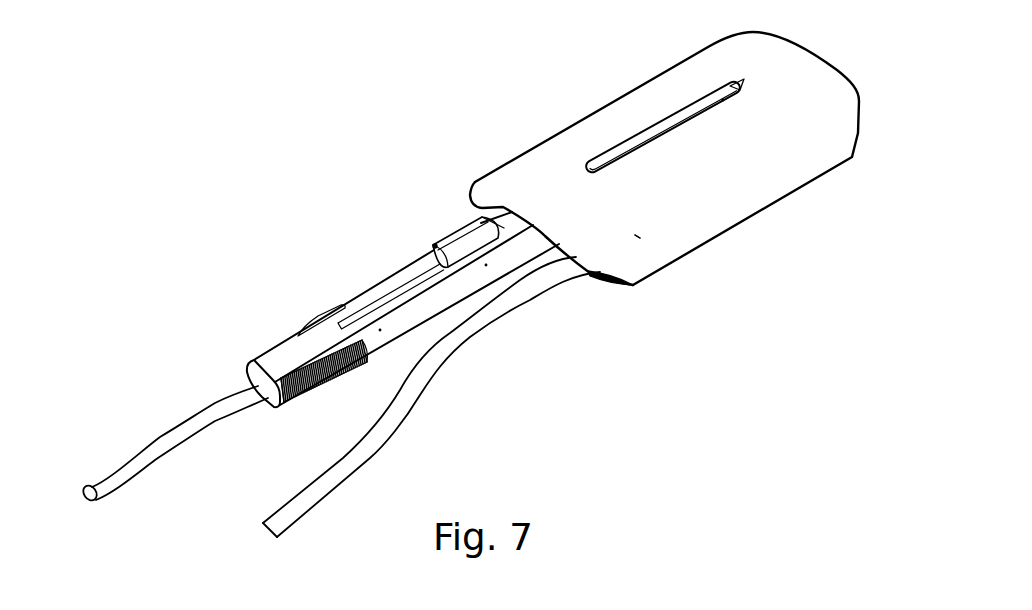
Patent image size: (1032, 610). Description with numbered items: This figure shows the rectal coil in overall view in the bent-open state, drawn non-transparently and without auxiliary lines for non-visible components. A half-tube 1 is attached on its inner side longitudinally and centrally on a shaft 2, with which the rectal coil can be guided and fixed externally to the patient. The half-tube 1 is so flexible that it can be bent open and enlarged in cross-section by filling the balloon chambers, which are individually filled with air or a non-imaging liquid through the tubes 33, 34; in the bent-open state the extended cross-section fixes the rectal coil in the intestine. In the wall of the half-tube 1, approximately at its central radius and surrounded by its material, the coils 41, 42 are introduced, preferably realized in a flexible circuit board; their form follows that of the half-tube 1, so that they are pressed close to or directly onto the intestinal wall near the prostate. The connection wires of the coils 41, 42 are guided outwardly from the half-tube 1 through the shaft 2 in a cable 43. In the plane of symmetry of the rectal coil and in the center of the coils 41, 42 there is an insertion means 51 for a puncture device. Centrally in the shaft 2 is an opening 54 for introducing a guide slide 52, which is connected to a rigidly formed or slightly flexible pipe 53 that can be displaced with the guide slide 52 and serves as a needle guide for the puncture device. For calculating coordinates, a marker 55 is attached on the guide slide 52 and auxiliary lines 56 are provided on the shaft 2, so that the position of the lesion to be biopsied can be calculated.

The half-tube 1 is at (803, 133).
The shaft 2 is at (420, 312).
The tube 33 is at (318, 327).
The tube 34 is at (397, 410).
The coil 41 is at (635, 235).
The coil 42 is at (635, 235).
The cable 43 is at (120, 482).
The insertion means 51 is at (687, 113).
The guide slide 52 is at (467, 230).
The pipe 53 is at (490, 256).
The opening 54 is at (415, 283).
The marker 55 is at (720, 82).
The auxiliary lines 56 is at (380, 330).